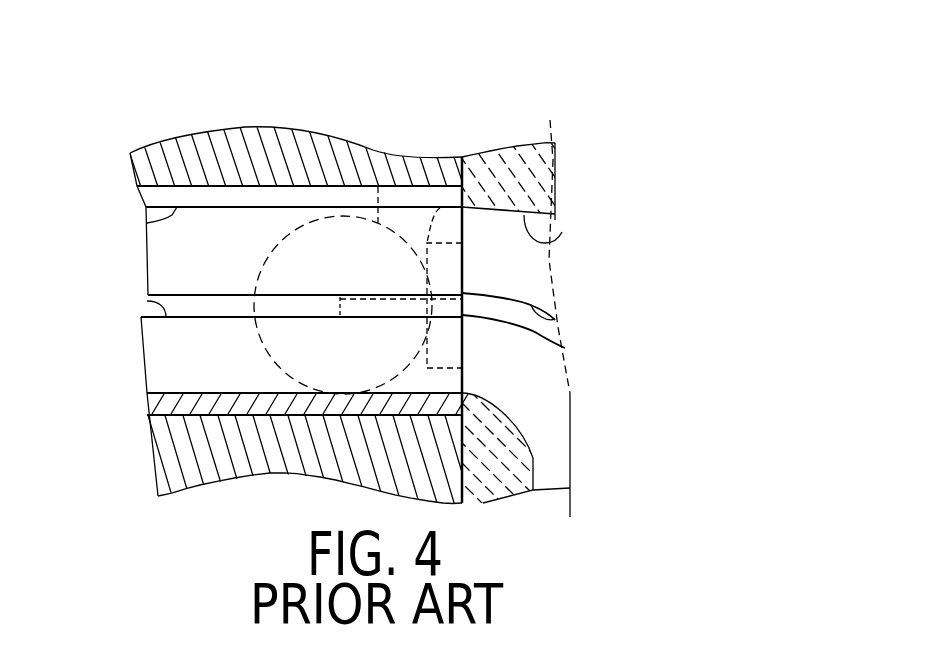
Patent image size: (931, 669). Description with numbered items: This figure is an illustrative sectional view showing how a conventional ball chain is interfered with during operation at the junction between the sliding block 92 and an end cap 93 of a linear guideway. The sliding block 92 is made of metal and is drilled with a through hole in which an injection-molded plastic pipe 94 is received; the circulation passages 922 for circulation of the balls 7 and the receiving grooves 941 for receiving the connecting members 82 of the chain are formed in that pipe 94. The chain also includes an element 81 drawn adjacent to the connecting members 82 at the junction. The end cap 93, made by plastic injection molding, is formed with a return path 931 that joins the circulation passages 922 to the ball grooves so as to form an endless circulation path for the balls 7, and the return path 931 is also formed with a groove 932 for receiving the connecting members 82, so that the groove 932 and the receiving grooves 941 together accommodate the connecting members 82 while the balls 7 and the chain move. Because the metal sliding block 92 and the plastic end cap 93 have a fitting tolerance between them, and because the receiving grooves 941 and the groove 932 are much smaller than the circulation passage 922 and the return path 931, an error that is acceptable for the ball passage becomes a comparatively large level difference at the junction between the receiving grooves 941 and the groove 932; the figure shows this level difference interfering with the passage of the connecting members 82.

The balls 7 is at (407, 150).
The mounting plate 81 is at (461, 142).
The connecting members 82 is at (355, 297).
The sliding block 92 is at (313, 164).
The circulation passages 922 is at (143, 230).
The end caps 93 is at (516, 163).
The return path 931 is at (565, 235).
The groove 932 is at (555, 320).
The pipe 94 is at (208, 200).
The receiving grooves 941 is at (145, 305).